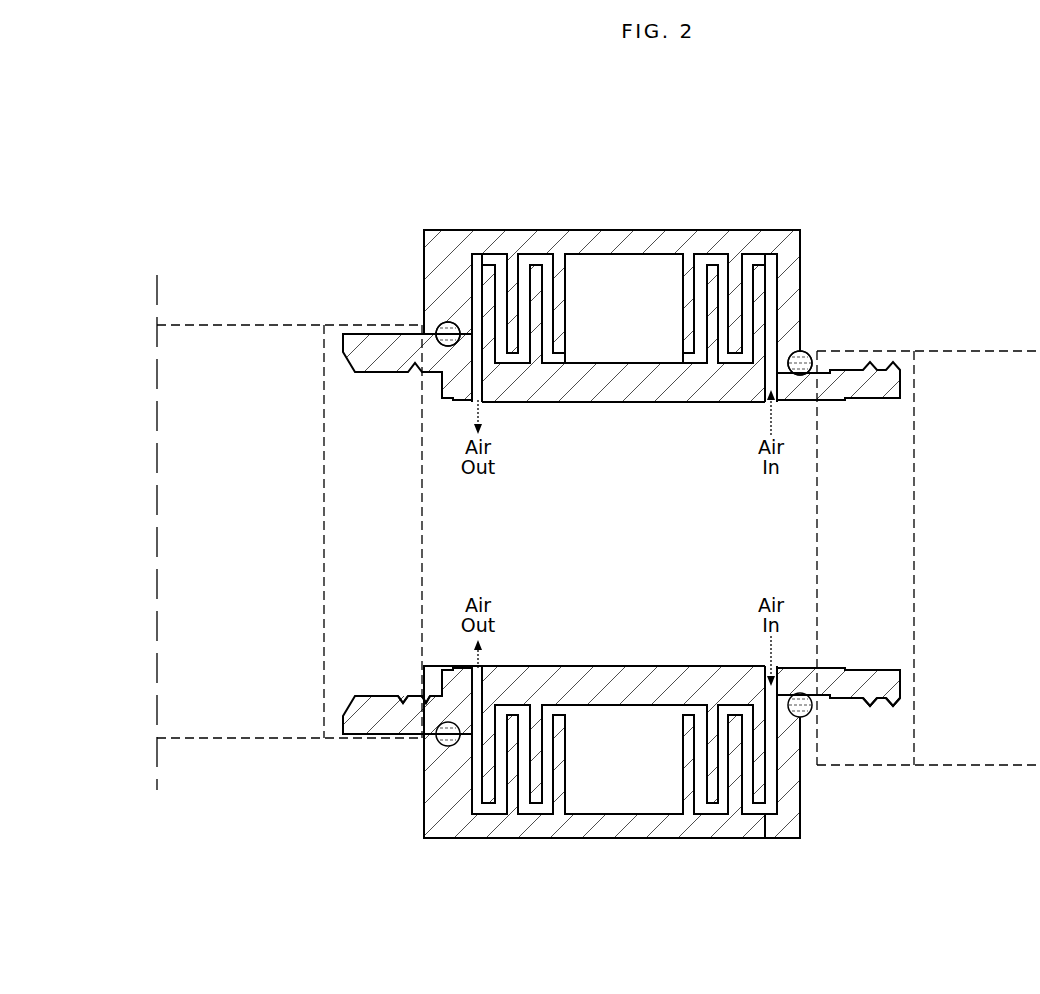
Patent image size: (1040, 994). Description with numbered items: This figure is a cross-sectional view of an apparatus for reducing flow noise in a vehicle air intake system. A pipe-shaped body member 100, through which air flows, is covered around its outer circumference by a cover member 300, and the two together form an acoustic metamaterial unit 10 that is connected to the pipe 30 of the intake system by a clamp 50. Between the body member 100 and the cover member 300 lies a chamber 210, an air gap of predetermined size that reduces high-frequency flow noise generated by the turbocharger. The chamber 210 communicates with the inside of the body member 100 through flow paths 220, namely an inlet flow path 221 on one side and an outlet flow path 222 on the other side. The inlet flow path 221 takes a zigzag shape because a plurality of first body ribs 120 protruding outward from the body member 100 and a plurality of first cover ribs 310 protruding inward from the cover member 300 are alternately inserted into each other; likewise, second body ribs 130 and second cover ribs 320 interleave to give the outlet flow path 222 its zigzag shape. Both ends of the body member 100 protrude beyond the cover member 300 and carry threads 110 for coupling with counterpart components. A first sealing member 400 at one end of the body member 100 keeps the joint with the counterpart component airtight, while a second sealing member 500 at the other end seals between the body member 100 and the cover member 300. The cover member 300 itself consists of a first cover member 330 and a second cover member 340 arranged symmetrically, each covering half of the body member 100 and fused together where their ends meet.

The acoustic metamaterial unit 10 is at (750, 229).
The pipe 30 is at (248, 325).
The clamp 50 is at (387, 735).
The body member 100 is at (627, 687).
The threads 110 is at (403, 697).
The first body ribs 120 is at (713, 305).
The second body ribs 130 is at (535, 305).
The chamber 210 is at (633, 292).
The flow paths 220 is at (625, 289).
The inlet flow path 221 is at (772, 276).
The outlet flow path 222 is at (477, 277).
The cover member 300 is at (421, 829).
The first cover ribs 310 is at (735, 283).
The second cover ribs 320 is at (558, 318).
The first cover member 330 is at (490, 265).
The second cover member 340 is at (723, 827).
The first sealing member 400 is at (815, 363).
The second sealing member 500 is at (437, 343).